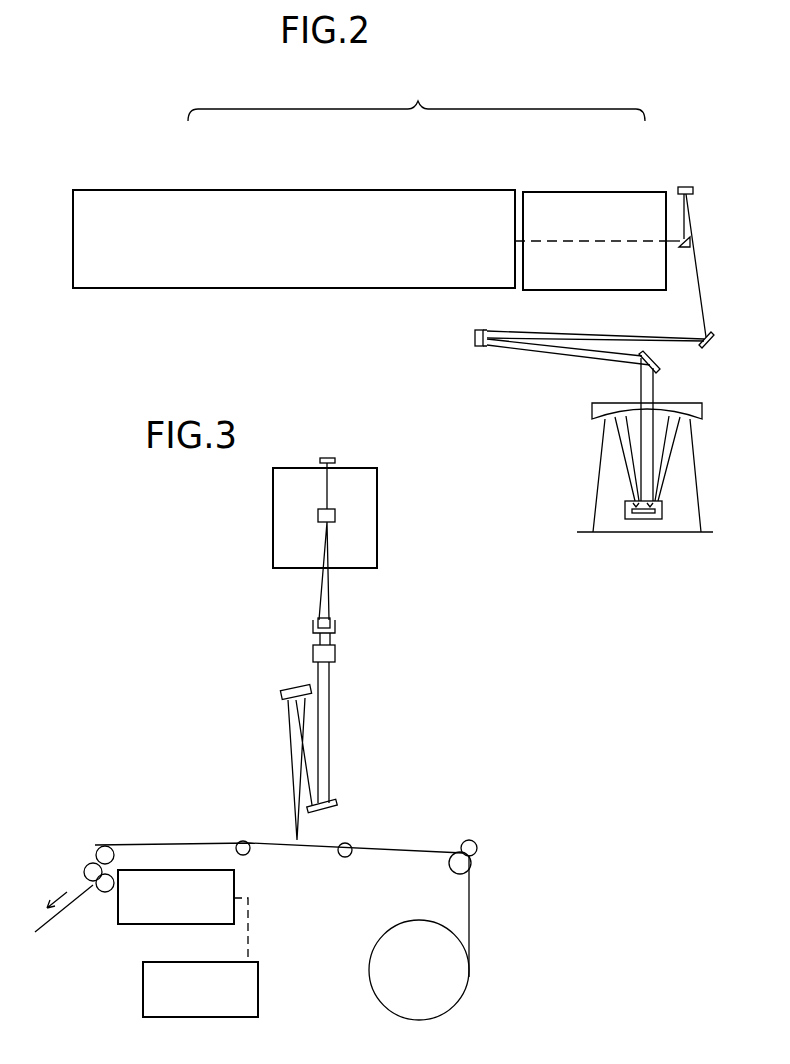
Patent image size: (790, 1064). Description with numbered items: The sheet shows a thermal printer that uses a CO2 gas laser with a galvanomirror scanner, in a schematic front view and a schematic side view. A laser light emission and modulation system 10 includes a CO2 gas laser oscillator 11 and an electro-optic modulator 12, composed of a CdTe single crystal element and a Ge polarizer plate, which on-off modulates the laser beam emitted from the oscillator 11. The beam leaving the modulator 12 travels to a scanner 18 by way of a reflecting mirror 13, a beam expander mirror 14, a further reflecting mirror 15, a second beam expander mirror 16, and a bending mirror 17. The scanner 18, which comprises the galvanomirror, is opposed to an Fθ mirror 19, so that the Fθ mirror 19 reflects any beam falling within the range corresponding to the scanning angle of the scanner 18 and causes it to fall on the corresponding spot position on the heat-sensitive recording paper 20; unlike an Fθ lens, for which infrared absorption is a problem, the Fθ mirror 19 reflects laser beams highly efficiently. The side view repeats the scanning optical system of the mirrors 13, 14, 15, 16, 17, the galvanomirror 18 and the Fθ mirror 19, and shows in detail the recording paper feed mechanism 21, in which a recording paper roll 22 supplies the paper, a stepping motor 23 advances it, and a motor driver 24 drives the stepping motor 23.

In FIG. 2, the laser light emission and modulation system 10 is at (416, 99).
In FIG. 2, the CO2 gas laser oscillator 11 is at (190, 196).
In FIG. 2, the electro-optic modulator 12 is at (585, 200).
In FIG. 3, the electro-optic modulator 12 is at (370, 505).
In FIG. 2, the reflecting mirror 13 is at (681, 250).
In FIG. 3, the reflecting mirror 13 is at (318, 511).
In FIG. 2, the beam expander mirror 14 is at (690, 186).
In FIG. 3, the beam expander mirror 14 is at (334, 460).
In FIG. 2, the reflecting mirror 15 is at (715, 340).
In FIG. 3, the reflecting mirror 15 is at (331, 620).
In FIG. 2, the beam expander mirror 16 is at (475, 337).
In FIG. 3, the beam expander mirror 16 is at (313, 628).
In FIG. 2, the bending mirror 17 is at (660, 362).
In FIG. 3, the bending mirror 17 is at (335, 652).
In FIG. 2, the scanner 18 is at (662, 511).
In FIG. 3, the scanner 18 is at (338, 812).
In FIG. 2, the Fθ mirror 19 is at (702, 413).
In FIG. 3, the Fθ mirror 19 is at (290, 688).
In FIG. 2, the heat-sensitive recording paper 20 is at (665, 533).
In FIG. 3, the heat-sensitive recording paper 20 is at (270, 840).
In FIG. 3, the recording paper feed mechanism 21 is at (324, 1025).
In FIG. 3, the recording paper roll 22 is at (447, 985).
In FIG. 3, the stepping motor 23 is at (120, 924).
In FIG. 3, the motor driver 24 is at (143, 1010).